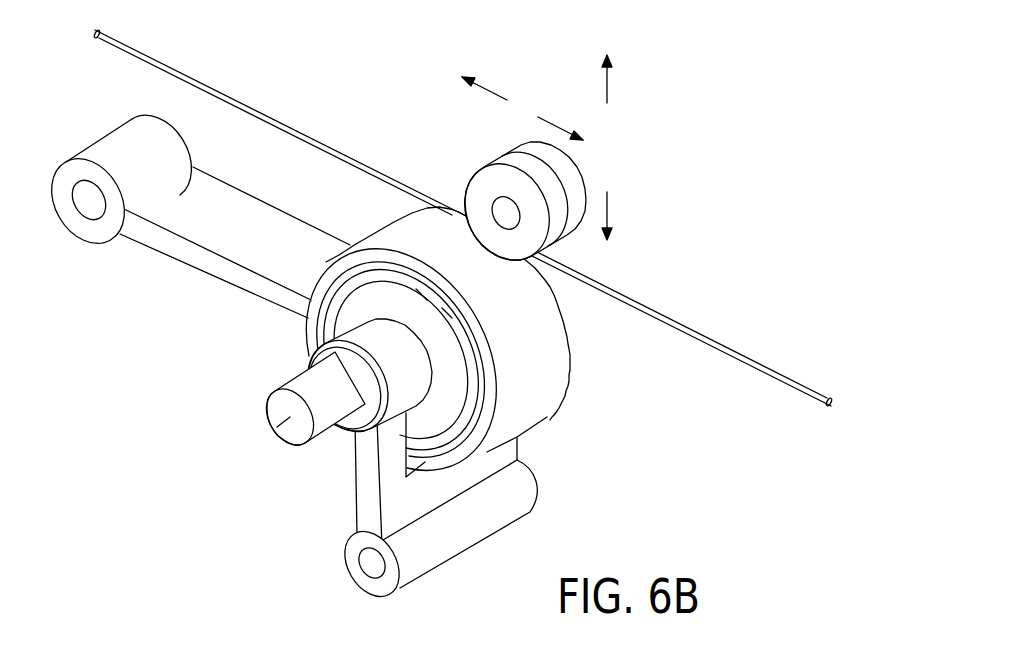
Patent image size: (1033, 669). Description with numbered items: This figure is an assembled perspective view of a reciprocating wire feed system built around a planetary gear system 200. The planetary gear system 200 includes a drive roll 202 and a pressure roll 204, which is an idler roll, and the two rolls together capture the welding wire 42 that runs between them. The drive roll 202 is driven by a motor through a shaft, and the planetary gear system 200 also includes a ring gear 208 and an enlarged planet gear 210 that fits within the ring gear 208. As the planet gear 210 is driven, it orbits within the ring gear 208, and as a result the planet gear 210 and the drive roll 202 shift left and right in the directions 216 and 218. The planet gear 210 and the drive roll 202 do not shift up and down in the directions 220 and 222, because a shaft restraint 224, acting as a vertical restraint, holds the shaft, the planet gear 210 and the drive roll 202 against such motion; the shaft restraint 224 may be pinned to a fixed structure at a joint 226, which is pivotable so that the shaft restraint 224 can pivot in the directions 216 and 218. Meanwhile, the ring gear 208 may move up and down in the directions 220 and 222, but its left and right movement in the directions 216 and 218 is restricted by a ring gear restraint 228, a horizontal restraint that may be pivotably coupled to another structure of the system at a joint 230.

The welding wire 42 is at (605, 283).
The planetary gear system 200 is at (434, 321).
The drive roll 202 is at (558, 292).
The pressure roll 204 is at (485, 193).
The ring gear 208 is at (537, 395).
The planet gear 210 is at (362, 302).
The direction 216 is at (553, 124).
The direction 218 is at (488, 91).
The direction 220 is at (607, 83).
The direction 222 is at (607, 208).
The shaft restraint 224 is at (438, 485).
The joint 226 is at (372, 567).
The ring gear restraint 228 is at (213, 257).
The joint 230 is at (88, 202).